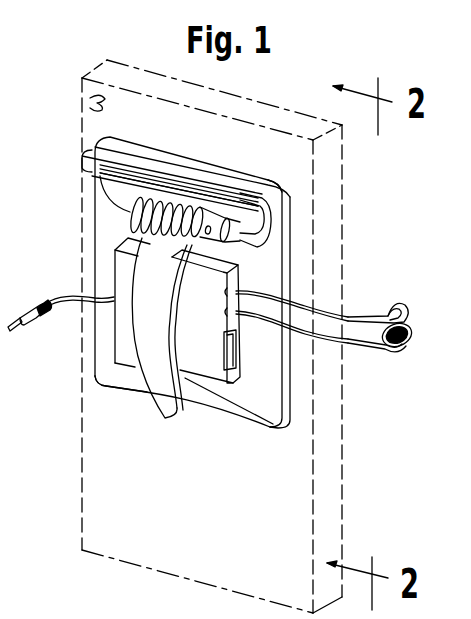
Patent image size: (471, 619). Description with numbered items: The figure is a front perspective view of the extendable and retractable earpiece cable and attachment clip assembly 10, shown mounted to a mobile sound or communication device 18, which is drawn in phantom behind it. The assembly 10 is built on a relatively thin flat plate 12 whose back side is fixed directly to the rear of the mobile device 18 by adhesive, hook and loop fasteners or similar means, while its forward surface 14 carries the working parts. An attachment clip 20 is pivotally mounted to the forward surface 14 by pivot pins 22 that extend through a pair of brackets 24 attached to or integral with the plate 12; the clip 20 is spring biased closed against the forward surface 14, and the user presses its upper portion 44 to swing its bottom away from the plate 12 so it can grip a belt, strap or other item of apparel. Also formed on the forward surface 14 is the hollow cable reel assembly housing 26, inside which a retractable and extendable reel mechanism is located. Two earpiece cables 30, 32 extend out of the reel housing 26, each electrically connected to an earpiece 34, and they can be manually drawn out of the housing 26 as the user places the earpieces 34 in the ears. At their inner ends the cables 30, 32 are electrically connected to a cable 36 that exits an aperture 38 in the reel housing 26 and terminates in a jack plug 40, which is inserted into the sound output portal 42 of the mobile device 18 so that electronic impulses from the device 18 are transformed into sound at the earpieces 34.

The extendable and retractable earpiece cable and attachment clip assembly 10 is at (272, 248).
The plate 12 is at (100, 372).
The forward surface 14 is at (108, 218).
The mobile sound or communication device 18 is at (310, 185).
The attachment clip 20 is at (143, 375).
The pivot pins 22 is at (127, 190).
The brackets 24 is at (127, 197).
The cable reel assembly housing 26 is at (210, 377).
The earpiece cable 30 is at (327, 311).
The earpiece cable 32 is at (323, 342).
The earpiece 34 is at (390, 303).
The cable 36 is at (70, 307).
The aperture 38 is at (112, 293).
The jack plug 40 is at (32, 305).
The sound output portal 42 is at (95, 72).
The upper portion 44 is at (152, 170).